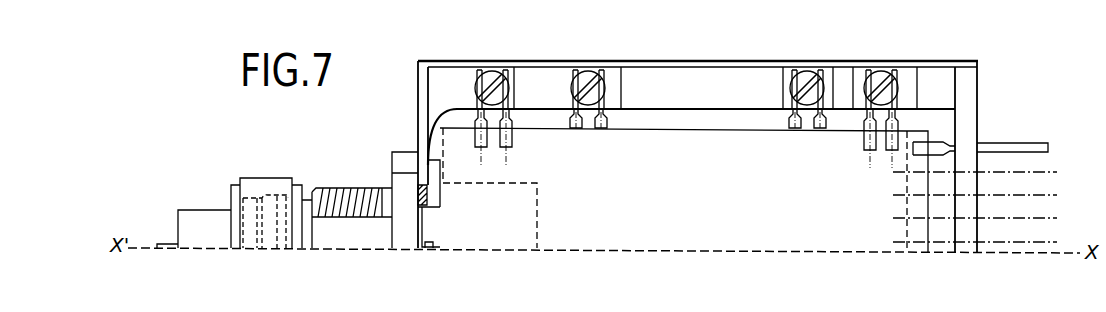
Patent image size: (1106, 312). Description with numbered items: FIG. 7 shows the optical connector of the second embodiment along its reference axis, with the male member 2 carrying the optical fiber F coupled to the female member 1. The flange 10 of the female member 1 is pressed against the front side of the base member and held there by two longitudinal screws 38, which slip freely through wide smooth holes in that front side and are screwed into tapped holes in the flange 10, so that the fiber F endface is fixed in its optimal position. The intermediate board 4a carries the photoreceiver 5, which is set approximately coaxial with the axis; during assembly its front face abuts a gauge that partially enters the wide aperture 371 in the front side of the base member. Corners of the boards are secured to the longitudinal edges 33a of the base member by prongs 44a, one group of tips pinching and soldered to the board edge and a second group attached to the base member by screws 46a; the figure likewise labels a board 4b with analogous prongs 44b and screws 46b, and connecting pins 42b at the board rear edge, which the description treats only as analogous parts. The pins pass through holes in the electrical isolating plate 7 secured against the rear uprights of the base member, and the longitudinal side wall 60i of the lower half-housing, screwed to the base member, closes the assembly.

The optical fiber F is at (200, 245).
The female member 1 is at (347, 188).
The male member 2 is at (272, 178).
The flange 10 is at (404, 149).
The intermediate board 4a is at (430, 226).
The carriage body 4b is at (728, 192).
The photoreceiver 5 is at (435, 246).
The longitudinal screws 38 is at (435, 164).
The wide aperture 371 is at (423, 203).
The longitudinal edges 33a is at (705, 80).
The screws 46a is at (805, 78).
The ball bearing 46b is at (490, 77).
The prongs 44a is at (787, 121).
The bearing retainer 44b is at (513, 136).
The longitudinal side wall 60i is at (937, 67).
The electrical isolating plate 7 is at (972, 88).
The shaft 42b is at (1007, 147).